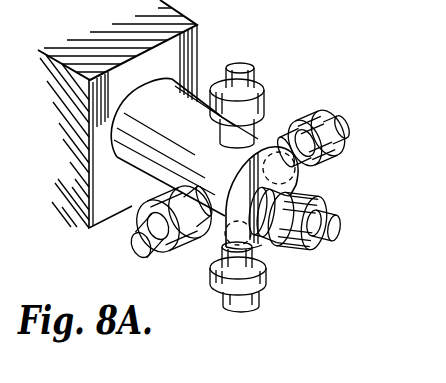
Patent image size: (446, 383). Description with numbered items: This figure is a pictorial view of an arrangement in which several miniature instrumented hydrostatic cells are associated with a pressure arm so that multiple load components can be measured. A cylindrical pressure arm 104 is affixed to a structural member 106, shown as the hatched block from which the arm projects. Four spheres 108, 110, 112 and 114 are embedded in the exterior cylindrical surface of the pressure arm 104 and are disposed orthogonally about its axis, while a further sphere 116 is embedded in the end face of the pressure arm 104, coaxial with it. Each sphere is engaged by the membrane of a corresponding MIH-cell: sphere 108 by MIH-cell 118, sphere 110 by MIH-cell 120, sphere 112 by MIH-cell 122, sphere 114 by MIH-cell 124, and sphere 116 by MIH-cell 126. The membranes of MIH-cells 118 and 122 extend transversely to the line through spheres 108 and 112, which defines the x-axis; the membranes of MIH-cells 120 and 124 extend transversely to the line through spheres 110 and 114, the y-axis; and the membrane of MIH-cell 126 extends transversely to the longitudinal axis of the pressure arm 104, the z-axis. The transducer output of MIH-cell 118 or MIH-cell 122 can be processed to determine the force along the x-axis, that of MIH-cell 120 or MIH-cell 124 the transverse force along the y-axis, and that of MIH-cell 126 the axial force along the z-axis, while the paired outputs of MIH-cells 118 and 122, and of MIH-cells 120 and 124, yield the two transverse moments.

The cylindrical pressure arm 104 is at (274, 147).
The structural member 106 is at (190, 43).
The sphere 108 is at (190, 168).
The sphere 110 is at (259, 136).
The sphere 112 is at (300, 180).
The sphere 114 is at (266, 244).
The sphere 116 is at (308, 232).
The MIH-cell 118 is at (178, 255).
The MIH-cell 120 is at (263, 78).
The MIH-cell 122 is at (346, 120).
The MIH-cell 124 is at (223, 286).
The MIH-cell 126 is at (303, 250).